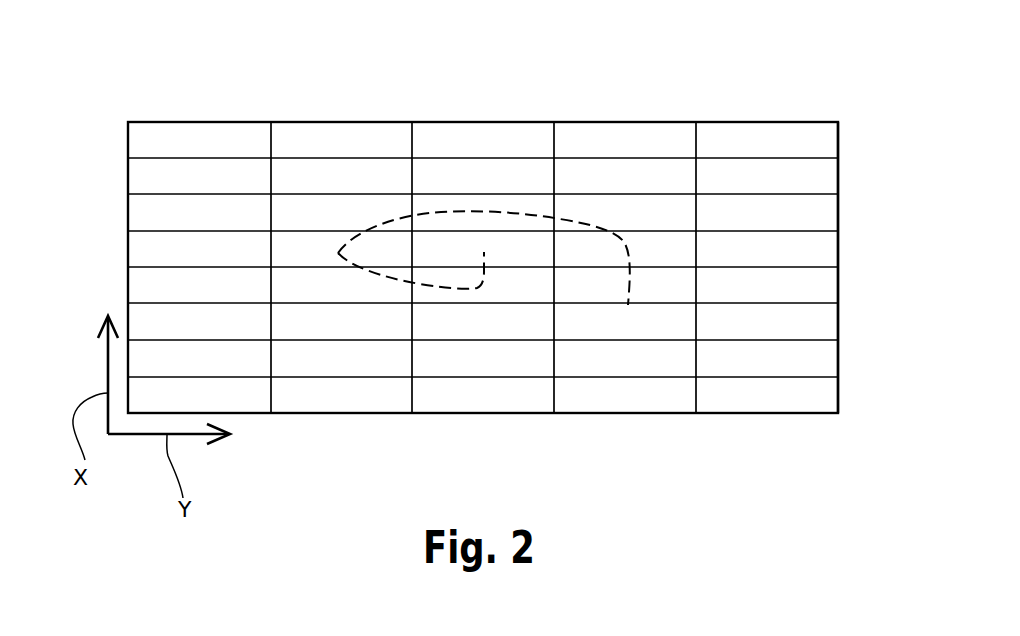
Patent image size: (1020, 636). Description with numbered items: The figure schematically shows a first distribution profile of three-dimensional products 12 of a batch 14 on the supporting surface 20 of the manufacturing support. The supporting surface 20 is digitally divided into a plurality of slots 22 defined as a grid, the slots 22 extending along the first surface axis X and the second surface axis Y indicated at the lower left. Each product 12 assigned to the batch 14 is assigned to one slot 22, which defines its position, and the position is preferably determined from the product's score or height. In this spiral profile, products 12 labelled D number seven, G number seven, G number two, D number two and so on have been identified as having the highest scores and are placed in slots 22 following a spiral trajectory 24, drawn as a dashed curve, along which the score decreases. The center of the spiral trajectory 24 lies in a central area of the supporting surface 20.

The three-dimensional product 12 is at (347, 234).
The batch 14 is at (799, 121).
The supporting surface 20 is at (838, 253).
The slot 22 is at (290, 135).
The spiral trajectory 24 is at (575, 207).